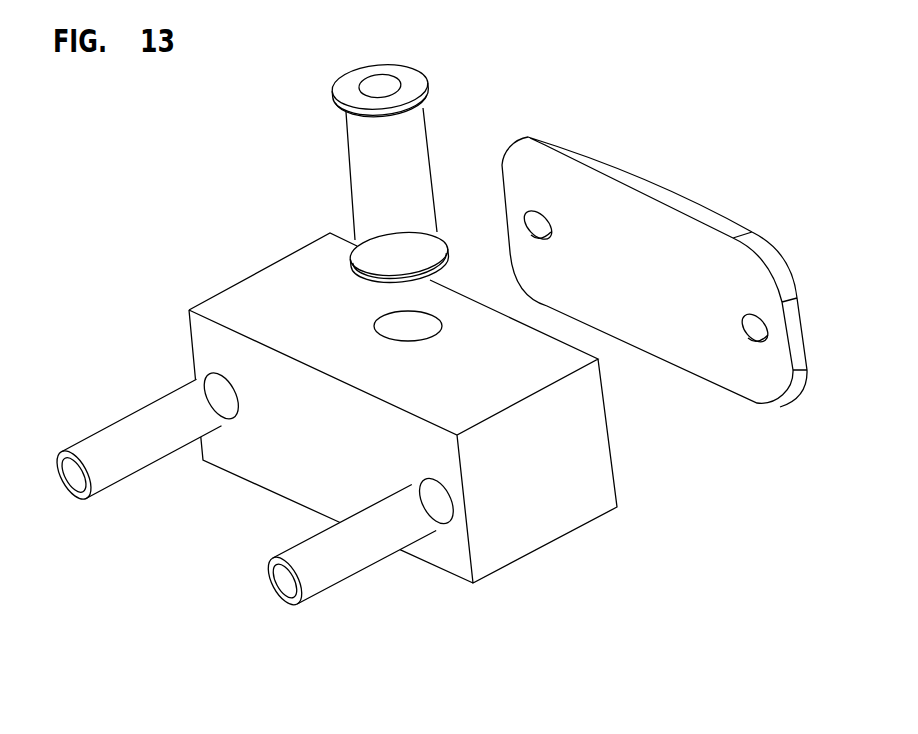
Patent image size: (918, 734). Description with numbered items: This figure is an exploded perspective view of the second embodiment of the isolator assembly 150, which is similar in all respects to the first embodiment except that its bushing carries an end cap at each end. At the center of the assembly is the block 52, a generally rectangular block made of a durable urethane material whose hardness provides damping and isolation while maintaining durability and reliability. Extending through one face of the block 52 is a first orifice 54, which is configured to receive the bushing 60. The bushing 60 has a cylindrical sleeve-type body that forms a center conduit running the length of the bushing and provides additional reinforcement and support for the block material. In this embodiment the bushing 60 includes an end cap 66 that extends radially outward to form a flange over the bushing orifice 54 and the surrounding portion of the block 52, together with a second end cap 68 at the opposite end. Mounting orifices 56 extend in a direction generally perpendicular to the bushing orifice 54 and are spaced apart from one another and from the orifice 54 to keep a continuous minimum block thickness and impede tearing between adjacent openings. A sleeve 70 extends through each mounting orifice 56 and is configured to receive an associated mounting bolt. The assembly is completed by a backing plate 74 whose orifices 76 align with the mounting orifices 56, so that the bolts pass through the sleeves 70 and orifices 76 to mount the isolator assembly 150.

The isolator assembly 150 is at (226, 211).
The block 52 is at (558, 522).
The first orifice 54 is at (412, 332).
The mounting orifices 56 is at (222, 383).
The bushing 60 is at (460, 117).
The end cap 66 is at (368, 72).
The second end cap 68 is at (442, 242).
The sleeve 70 is at (123, 437).
The backing plate 74 is at (782, 242).
The orifices 76 is at (538, 221).